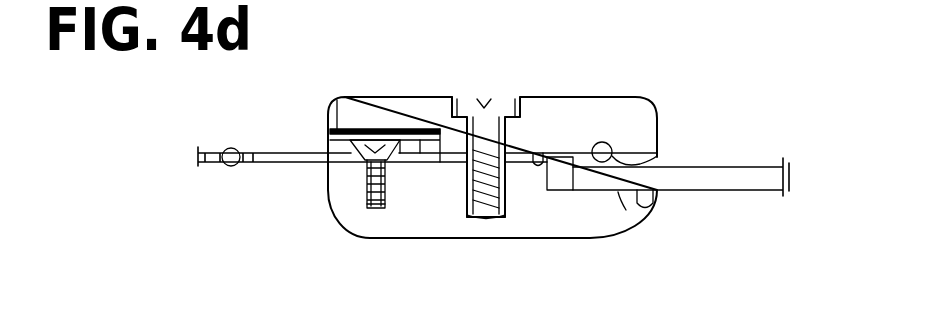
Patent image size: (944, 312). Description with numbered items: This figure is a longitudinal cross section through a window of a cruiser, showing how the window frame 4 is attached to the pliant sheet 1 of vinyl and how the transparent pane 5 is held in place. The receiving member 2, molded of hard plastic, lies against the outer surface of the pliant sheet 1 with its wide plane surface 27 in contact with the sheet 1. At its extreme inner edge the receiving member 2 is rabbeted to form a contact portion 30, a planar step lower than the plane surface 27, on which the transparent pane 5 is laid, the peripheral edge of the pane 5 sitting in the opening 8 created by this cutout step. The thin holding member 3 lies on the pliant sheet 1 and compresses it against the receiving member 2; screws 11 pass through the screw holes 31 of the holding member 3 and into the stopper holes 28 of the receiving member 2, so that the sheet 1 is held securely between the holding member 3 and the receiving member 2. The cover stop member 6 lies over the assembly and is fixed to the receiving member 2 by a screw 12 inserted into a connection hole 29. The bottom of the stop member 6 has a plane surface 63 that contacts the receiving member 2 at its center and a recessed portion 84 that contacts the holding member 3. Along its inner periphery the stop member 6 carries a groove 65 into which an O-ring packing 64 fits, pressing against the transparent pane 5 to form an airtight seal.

The pliant sheet 1 is at (272, 153).
The receiving member 2 is at (415, 238).
The holding member 3 is at (330, 136).
The window frame 4 is at (641, 192).
The transparent pane 5 is at (710, 190).
The stop member 6 is at (367, 100).
The opening 8 is at (573, 190).
The screw 11 is at (328, 188).
The screw 12 is at (500, 97).
The plane surface 27 is at (443, 97).
The stopper hole 28 is at (371, 208).
The connection hole 29 is at (475, 217).
The contact portion 30 is at (619, 192).
The screw hole 31 is at (402, 104).
The plane surface 63 is at (537, 153).
The O-ring packing 64 is at (657, 157).
The groove 65 is at (603, 142).
The recessed portion 84 is at (335, 100).